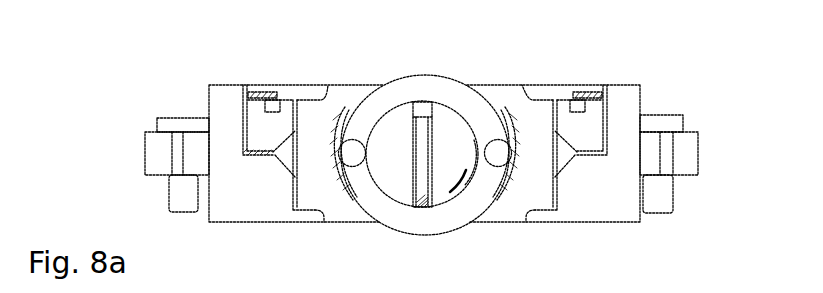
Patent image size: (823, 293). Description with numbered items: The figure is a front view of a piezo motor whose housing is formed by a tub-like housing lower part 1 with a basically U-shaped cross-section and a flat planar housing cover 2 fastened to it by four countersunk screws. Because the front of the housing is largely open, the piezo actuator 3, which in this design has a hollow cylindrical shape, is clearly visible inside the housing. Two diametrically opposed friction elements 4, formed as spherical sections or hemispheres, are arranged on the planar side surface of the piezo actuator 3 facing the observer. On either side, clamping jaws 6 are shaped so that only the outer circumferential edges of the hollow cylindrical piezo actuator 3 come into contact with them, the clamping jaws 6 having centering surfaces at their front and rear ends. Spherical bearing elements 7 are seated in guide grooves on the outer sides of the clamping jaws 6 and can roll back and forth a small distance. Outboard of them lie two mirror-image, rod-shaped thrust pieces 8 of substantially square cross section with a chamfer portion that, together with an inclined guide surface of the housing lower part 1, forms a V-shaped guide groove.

The housing lower part 1 is at (630, 192).
The housing cover 2 is at (293, 95).
The piezo actuator 3 is at (427, 218).
The friction element 4 is at (501, 158).
The clamping jaw 6 is at (537, 115).
The bearing element 7 is at (288, 157).
The thrust piece 8 is at (262, 127).